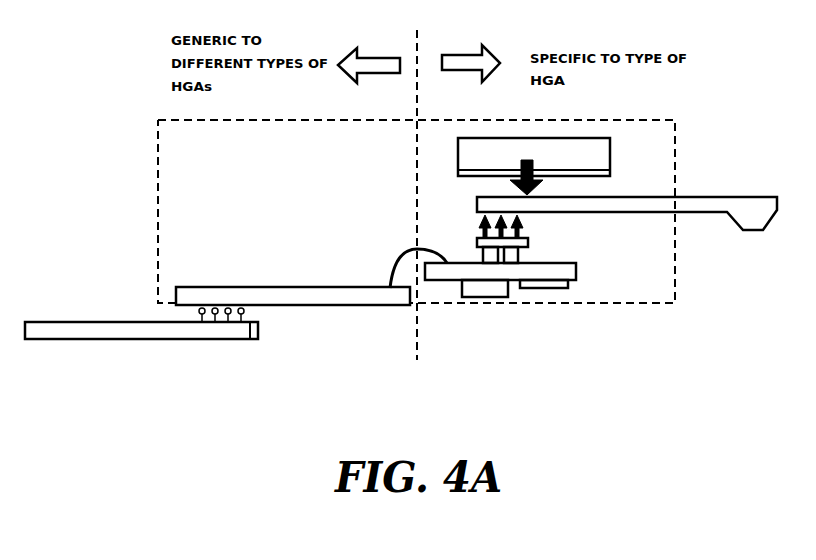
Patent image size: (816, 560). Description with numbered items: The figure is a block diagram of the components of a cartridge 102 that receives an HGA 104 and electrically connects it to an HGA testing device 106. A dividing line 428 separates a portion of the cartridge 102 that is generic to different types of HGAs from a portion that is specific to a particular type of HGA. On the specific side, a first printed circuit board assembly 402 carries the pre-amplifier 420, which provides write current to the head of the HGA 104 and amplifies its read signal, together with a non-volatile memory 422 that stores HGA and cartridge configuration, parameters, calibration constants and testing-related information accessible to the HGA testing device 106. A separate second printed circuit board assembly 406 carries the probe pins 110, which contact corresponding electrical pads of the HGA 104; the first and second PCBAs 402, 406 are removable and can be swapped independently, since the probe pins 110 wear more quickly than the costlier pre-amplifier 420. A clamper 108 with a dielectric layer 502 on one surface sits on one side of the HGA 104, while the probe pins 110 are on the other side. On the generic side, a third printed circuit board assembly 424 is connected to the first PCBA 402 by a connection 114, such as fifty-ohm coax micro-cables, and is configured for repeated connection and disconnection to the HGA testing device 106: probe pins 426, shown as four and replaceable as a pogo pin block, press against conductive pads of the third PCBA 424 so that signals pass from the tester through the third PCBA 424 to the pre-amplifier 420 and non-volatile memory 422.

The cartridge 102 is at (157, 243).
The HGA 104 is at (700, 212).
The HGA testing device 106 is at (133, 339).
The clamper 108 is at (585, 138).
The probe pins 110 is at (537, 230).
The connection 114 is at (388, 265).
The first printed circuit board assembly 402 is at (577, 272).
The second printed circuit board assembly 406 is at (477, 241).
The pre-amplifier 420 is at (488, 297).
The non-volatile memory 422 is at (543, 289).
The third printed circuit board assembly 424 is at (330, 305).
The probe pins 426 is at (248, 326).
The dividing line 428 is at (415, 343).
The dielectric layer 502 is at (598, 178).